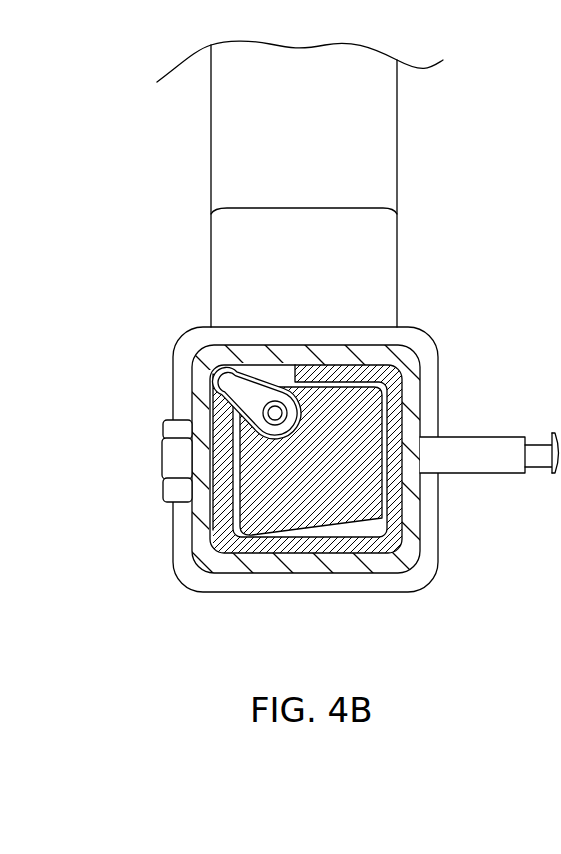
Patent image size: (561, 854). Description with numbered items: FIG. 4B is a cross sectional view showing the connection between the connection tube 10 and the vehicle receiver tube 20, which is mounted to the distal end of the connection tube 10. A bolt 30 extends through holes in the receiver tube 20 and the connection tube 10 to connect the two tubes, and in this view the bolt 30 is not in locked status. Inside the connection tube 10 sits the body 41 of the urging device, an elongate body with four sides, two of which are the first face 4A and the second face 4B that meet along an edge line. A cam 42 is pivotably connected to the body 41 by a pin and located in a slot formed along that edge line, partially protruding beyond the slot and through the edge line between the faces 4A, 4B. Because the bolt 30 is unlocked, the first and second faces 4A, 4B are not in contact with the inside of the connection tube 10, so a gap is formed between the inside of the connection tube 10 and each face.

The connection tube 10 is at (327, 381).
The vehicle receiver tube 20 is at (200, 398).
The bolt 30 is at (487, 463).
The body 41 is at (395, 410).
The cam 42 is at (245, 388).
The first face 4A is at (207, 514).
The second face 4B is at (378, 368).